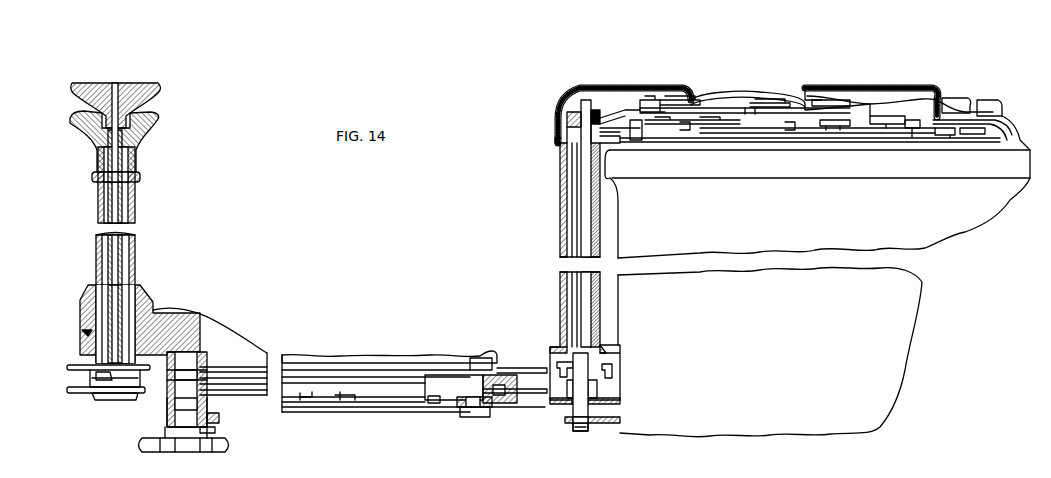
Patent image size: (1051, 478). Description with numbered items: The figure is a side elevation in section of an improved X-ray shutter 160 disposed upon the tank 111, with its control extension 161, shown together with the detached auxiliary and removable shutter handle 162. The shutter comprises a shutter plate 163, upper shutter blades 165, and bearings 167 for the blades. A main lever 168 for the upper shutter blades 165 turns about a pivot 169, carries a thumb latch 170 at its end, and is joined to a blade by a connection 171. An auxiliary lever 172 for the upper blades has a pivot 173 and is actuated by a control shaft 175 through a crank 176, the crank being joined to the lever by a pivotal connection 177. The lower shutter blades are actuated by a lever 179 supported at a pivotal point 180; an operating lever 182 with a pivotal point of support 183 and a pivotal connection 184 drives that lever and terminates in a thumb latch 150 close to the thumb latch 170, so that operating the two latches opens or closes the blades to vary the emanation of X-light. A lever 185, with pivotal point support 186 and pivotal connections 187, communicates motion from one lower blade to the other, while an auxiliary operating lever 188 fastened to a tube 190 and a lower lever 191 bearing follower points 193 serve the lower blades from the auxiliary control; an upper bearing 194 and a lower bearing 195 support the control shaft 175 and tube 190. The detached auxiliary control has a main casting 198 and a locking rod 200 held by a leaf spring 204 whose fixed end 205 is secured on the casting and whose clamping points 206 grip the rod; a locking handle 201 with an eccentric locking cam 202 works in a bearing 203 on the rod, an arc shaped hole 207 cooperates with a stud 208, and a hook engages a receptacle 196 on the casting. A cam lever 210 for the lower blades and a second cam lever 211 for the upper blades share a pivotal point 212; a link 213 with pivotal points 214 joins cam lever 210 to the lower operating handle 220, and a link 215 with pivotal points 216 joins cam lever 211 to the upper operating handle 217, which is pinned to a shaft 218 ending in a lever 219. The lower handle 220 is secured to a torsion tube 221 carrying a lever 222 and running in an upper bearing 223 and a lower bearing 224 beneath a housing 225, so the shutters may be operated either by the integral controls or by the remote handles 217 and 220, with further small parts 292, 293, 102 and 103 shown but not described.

The upper operating handle 217 is at (160, 92).
The shaft 218 is at (140, 105).
The lower operating handle 220 is at (150, 132).
The torsion tube 221 is at (136, 158).
The upper bearing 223 is at (140, 183).
The auxiliary shutter handle 162 is at (138, 262).
The housing 225 is at (96, 268).
The lower bearing 224 is at (84, 352).
The lever 222 is at (66, 379).
The lever 219 is at (74, 396).
The eccentric locking cam 202 is at (166, 416).
The bearing 203 is at (178, 404).
The locking handle 201 is at (200, 453).
The lock nut 292 is at (215, 433).
The washer 293 is at (218, 420).
The link 215 is at (252, 386).
The main casting 198 is at (325, 353).
The link 213 is at (392, 376).
The locking rod 200 is at (378, 412).
The leaf spring 204 is at (310, 401).
The clamping points 206 is at (342, 400).
The fixed end 205 is at (432, 403).
The pivotal points 214 is at (472, 360).
The pivotal points 216 is at (492, 375).
The pivotal point 212 is at (505, 386).
The cam lever 210 is at (524, 366).
The second cam lever 211 is at (520, 395).
The arc shaped hole 207 is at (466, 410).
The stud 208 is at (480, 418).
The tank 111 is at (910, 302).
The lower bearing 195 is at (618, 345).
The X-ray shutter 160 is at (560, 96).
The control extension 161 is at (560, 190).
The tube 190 is at (575, 222).
The control shaft 175 is at (588, 100).
The crank 176 is at (567, 118).
The pivotal connection 177 is at (608, 108).
The auxiliary lever 172 is at (622, 108).
The upper bearing 194 is at (610, 143).
The auxiliary operating lever 188 is at (636, 140).
The pivot 173 is at (660, 100).
The upper shutter blades 165 is at (690, 96).
The bearings 167 is at (745, 106).
The pivotal connections 187 is at (662, 125).
The pivotal point support 186 is at (745, 133).
The lever 185 is at (766, 133).
The pivot 169 is at (820, 98).
The shutter plate 163 is at (862, 115).
The connection 171 is at (850, 100).
The main lever 168 is at (955, 98).
The thumb latch 170 is at (990, 106).
The thumb latch 150 is at (996, 108).
The pivotal point 180 is at (985, 140).
The lever 179 is at (972, 134).
The operating lever 182 is at (945, 136).
The pivotal connection 184 is at (912, 137).
The pivotal point of support 183 is at (902, 126).
The lower lever 191 is at (606, 356).
The follower points 193 is at (612, 368).
The nut 102 is at (598, 384).
The base plate 103 is at (598, 391).
The receptacle 196 is at (605, 422).